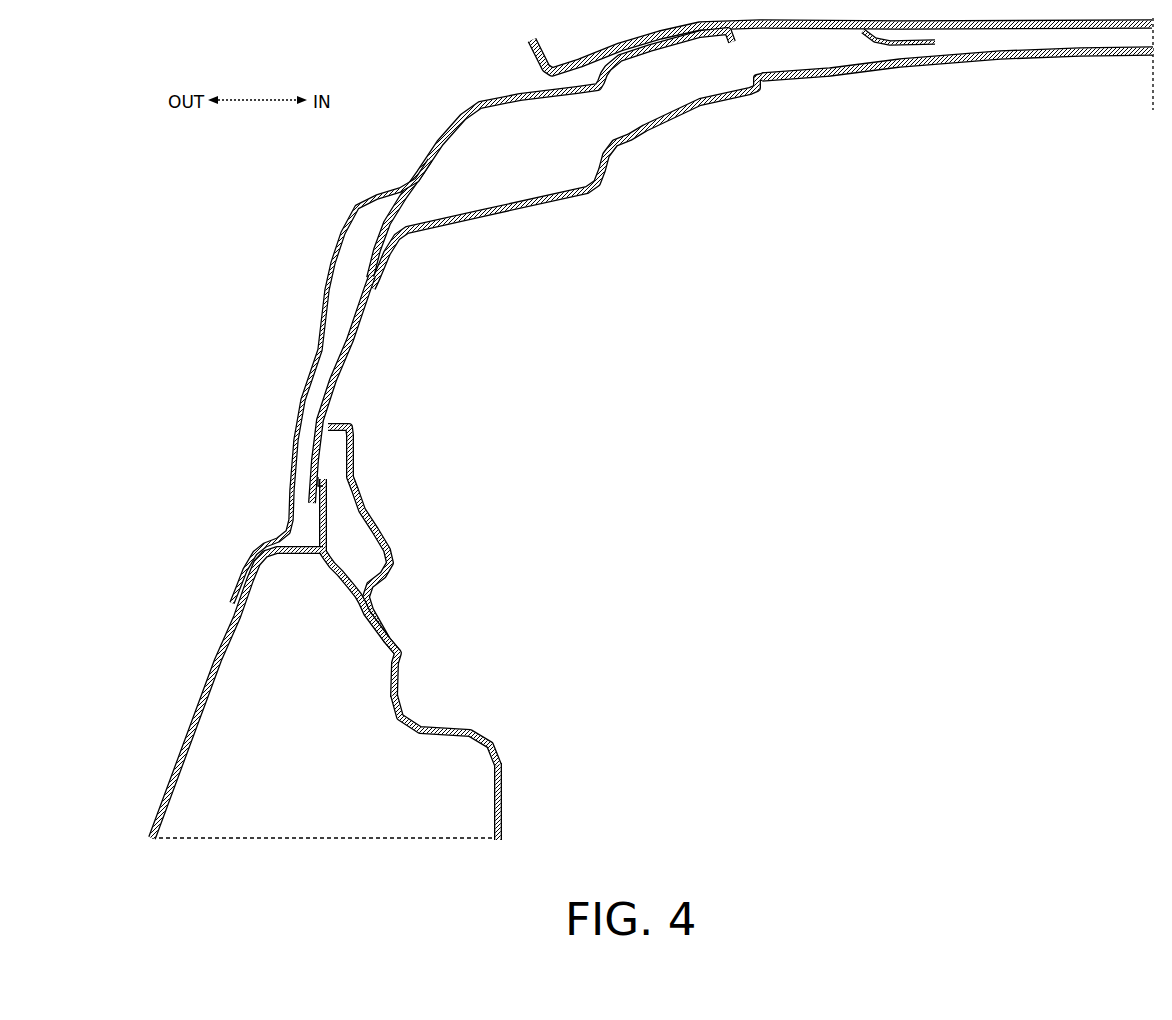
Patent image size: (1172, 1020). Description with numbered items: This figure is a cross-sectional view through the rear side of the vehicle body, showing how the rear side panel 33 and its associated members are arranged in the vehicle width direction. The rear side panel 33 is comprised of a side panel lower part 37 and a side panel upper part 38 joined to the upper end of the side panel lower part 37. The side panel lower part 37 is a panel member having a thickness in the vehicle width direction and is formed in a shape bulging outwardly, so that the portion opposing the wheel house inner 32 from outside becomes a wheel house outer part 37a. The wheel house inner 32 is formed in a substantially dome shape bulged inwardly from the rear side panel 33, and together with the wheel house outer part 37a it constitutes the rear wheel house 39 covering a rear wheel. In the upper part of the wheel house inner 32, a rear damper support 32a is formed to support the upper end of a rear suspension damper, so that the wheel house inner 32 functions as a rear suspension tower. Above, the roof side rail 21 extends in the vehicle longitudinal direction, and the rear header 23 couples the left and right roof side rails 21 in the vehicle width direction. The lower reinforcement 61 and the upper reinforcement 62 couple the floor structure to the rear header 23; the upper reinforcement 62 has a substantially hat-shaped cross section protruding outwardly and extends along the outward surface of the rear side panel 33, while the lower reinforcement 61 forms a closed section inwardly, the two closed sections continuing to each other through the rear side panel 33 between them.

The roof side rail 21 is at (466, 138).
The rear header 23 is at (988, 62).
The wheel house inner 32 is at (474, 696).
The rear damper support 32a is at (440, 728).
The rear side panel 33 is at (360, 456).
The side panel lower part 37 is at (321, 545).
The wheel house outer part 37a is at (193, 735).
The side panel upper part 38 is at (333, 383).
The rear wheel house 39 is at (355, 695).
The lower reinforcement 61 is at (388, 518).
The upper reinforcement 62 is at (313, 342).